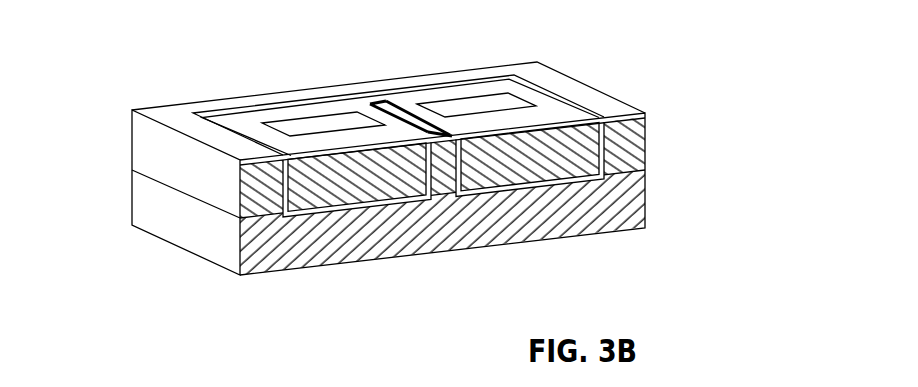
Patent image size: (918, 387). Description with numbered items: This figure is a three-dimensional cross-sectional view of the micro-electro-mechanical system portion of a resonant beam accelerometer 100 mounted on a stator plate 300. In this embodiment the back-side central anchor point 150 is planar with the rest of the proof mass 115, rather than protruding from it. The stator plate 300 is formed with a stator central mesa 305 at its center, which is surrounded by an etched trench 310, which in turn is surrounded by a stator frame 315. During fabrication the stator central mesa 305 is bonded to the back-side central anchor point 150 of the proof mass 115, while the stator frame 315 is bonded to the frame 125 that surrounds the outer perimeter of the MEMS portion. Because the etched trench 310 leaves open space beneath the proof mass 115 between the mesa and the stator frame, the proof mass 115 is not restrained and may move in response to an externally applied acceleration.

The resonant beam accelerometer 100 is at (428, 33).
The frame 125 is at (590, 96).
The proof mass 115 is at (548, 160).
The stator frame 315 is at (630, 183).
The stator plate 300 is at (583, 207).
The stator central mesa 305 is at (455, 208).
The etched trench 310 is at (356, 216).
The back-side central anchor point 150 is at (444, 181).